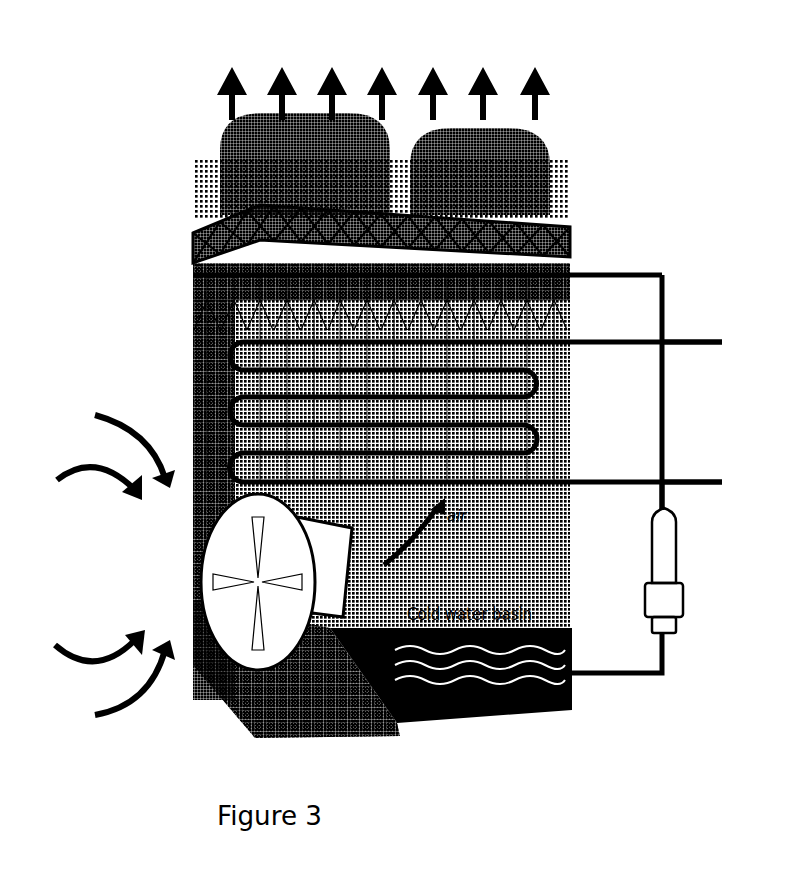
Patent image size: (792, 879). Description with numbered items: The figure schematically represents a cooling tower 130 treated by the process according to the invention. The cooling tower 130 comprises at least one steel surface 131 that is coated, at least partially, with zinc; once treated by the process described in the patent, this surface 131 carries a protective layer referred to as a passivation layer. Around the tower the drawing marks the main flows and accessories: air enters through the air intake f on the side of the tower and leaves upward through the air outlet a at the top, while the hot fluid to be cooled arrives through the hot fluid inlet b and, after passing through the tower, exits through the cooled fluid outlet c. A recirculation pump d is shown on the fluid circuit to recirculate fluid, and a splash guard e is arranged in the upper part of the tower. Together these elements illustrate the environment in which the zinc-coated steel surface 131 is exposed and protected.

The cooling tower 130 is at (197, 36).
The steel surface 131 is at (224, 395).
The air outlet a is at (383, 64).
The hot fluid inlet b is at (706, 340).
The cooled fluid outlet c is at (705, 483).
The recirculation pump d is at (683, 582).
The splash guard e is at (186, 251).
The air intake f is at (108, 565).